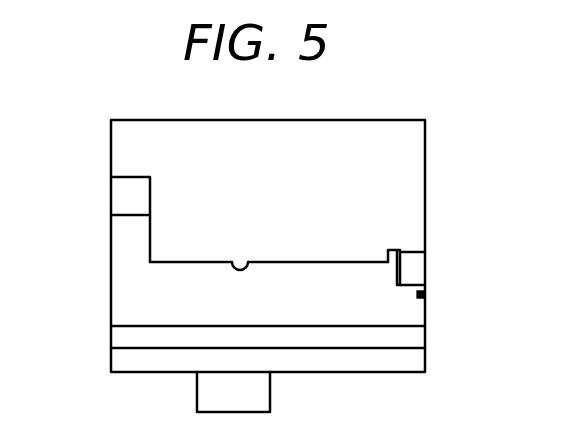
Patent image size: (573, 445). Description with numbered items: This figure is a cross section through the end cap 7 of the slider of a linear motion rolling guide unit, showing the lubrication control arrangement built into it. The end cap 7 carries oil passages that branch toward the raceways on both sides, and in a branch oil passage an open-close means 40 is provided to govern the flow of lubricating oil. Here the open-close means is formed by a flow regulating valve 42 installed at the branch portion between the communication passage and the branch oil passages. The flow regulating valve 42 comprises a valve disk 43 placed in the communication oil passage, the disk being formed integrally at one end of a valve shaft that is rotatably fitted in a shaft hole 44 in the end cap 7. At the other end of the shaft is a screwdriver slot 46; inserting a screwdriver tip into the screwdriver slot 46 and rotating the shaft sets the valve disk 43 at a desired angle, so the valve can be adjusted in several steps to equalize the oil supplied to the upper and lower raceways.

The end cap 7 is at (437, 168).
The open-close means 40 is at (333, 326).
The flow regulating valve 42 is at (115, 292).
The valve disk 43 is at (125, 235).
The shaft hole 44 is at (252, 262).
The screwdriver slot 46 is at (425, 296).